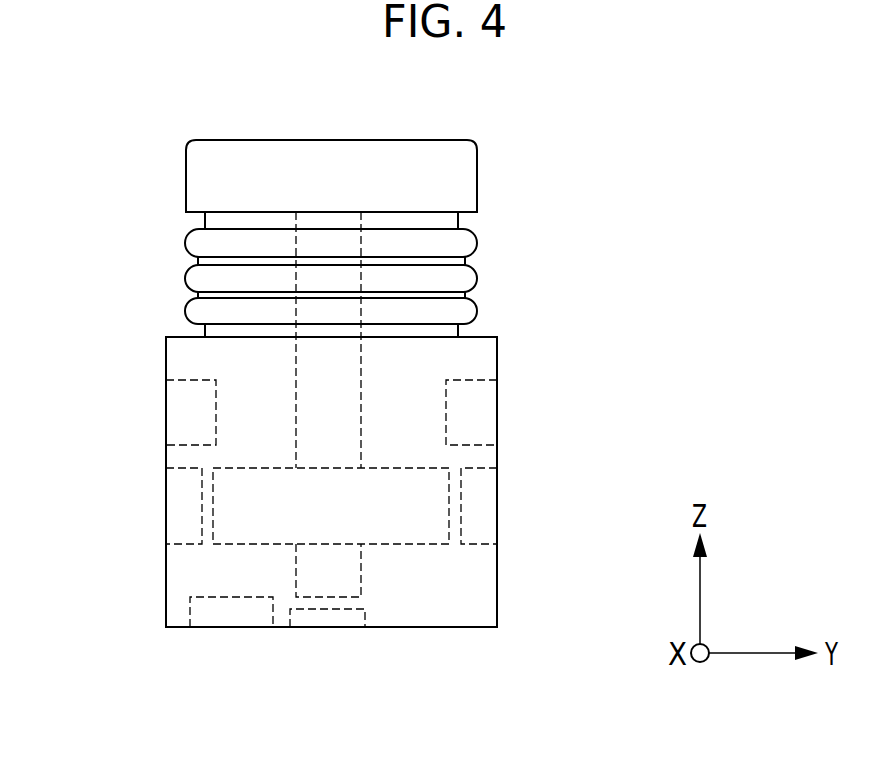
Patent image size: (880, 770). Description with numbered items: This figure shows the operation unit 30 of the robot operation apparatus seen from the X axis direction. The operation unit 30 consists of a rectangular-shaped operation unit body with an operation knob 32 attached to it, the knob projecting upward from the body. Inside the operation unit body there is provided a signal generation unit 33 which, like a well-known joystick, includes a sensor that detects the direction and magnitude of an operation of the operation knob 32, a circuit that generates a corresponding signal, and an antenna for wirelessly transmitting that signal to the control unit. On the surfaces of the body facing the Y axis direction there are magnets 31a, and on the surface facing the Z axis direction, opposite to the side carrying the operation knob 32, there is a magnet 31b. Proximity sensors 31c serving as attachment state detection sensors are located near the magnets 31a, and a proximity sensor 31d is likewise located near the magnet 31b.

The operation unit 30 is at (522, 186).
The operation knob 32 is at (361, 278).
The magnets 31a is at (186, 545).
The magnet 31b is at (367, 617).
The proximity sensors 31c is at (193, 380).
The proximity sensor 31d is at (190, 609).
The signal generation unit 33 is at (423, 545).